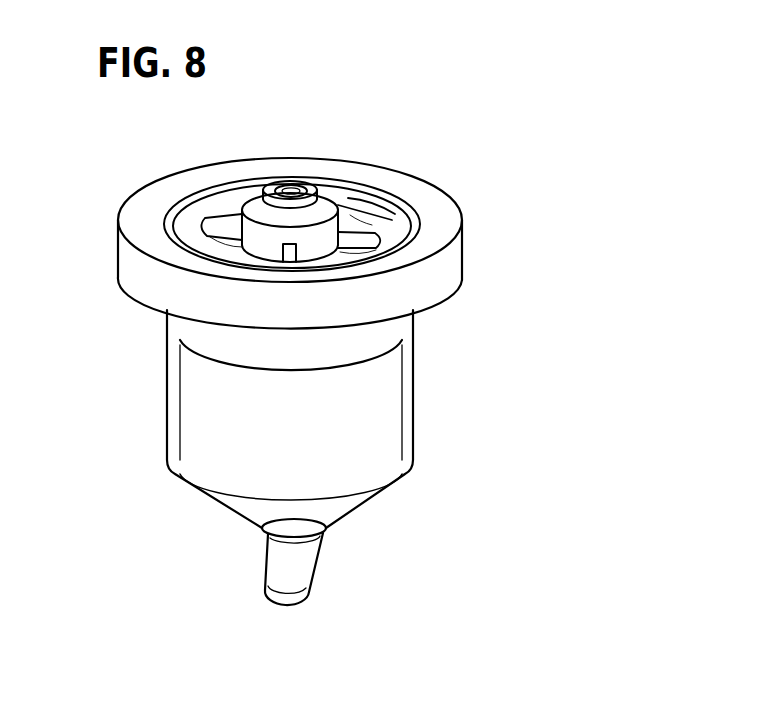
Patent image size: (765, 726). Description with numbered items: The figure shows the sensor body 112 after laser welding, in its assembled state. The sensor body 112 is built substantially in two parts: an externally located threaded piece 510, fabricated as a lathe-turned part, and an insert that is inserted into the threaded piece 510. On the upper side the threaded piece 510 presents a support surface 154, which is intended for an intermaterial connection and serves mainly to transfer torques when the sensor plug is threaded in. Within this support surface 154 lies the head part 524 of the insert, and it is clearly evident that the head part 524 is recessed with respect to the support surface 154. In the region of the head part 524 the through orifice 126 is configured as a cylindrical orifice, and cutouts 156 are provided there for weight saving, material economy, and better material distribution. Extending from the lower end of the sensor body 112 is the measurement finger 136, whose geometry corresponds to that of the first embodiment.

The sensor body 112 is at (458, 356).
The through orifice 126 is at (290, 190).
The measurement finger 136 is at (296, 573).
The support surface 154 is at (147, 211).
The cutouts 156 is at (356, 213).
The threaded piece 510 is at (388, 440).
The head part 524 is at (405, 215).